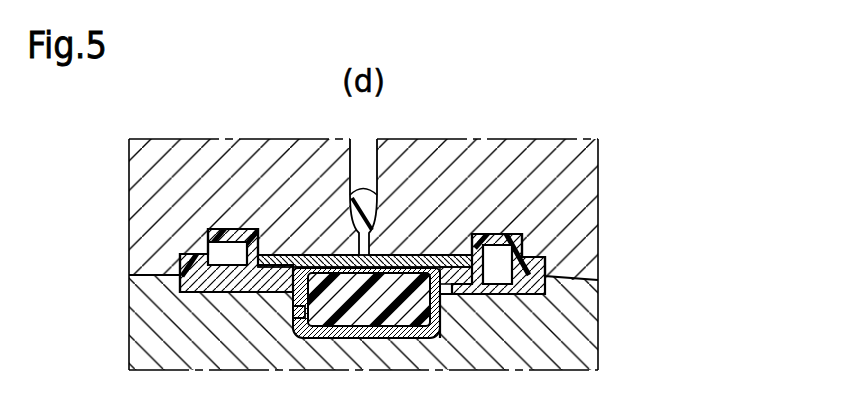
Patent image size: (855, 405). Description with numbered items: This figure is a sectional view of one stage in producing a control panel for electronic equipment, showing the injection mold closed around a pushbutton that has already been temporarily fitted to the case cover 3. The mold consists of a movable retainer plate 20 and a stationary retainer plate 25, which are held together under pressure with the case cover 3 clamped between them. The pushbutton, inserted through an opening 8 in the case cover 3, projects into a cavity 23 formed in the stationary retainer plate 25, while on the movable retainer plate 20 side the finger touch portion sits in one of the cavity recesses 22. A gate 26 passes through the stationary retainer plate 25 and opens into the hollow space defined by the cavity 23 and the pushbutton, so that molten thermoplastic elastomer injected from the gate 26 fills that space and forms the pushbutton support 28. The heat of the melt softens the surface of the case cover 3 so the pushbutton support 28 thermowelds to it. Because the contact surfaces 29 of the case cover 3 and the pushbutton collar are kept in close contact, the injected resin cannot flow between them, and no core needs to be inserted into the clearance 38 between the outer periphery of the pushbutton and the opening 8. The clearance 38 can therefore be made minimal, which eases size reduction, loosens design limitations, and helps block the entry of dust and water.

The movable retainer plate 20 is at (588, 223).
The stationary retainer plate 25 is at (583, 321).
The gate 26 is at (372, 240).
The pushbutton support 28 is at (300, 254).
The case cover 3 is at (206, 292).
The clearance 38 is at (288, 302).
The opening 8 is at (447, 292).
The contact surfaces 29 is at (470, 296).
The cavity 23 is at (292, 322).
The cavity recesses 22 is at (410, 317).